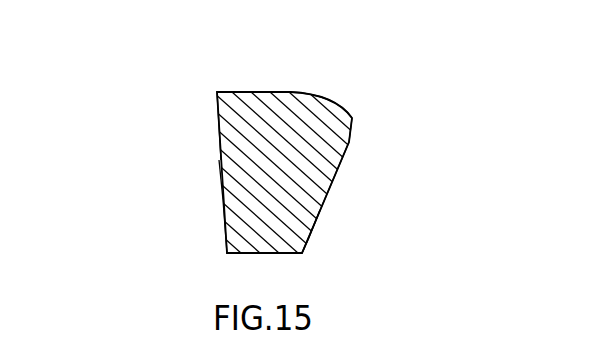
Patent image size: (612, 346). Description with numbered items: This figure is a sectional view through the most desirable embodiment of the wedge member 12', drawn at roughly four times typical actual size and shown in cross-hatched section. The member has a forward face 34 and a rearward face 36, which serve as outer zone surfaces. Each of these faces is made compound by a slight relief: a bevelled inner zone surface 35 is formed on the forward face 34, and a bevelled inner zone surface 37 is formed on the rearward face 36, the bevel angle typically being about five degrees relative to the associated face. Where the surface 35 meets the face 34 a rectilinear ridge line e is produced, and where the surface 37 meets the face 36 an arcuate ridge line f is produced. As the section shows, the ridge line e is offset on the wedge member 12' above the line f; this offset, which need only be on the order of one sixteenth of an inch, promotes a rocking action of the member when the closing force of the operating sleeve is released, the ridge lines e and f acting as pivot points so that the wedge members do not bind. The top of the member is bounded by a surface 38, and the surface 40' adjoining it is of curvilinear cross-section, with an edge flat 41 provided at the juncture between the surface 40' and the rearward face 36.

The wedge member 12' is at (287, 148).
The forward face 34 is at (217, 127).
The bevelled inner zone surface 35 is at (222, 223).
The rearward face 36 is at (333, 187).
The bevelled inner zone surface 37 is at (308, 240).
The top face 38 is at (253, 92).
The surface 40' is at (336, 83).
The edge flat 41 is at (352, 123).
The rectilinear ridge line e is at (218, 180).
The arcuate ridge line f is at (315, 230).